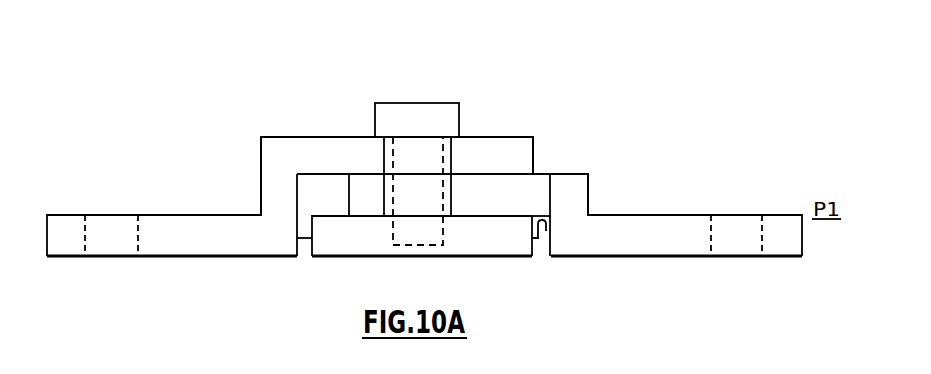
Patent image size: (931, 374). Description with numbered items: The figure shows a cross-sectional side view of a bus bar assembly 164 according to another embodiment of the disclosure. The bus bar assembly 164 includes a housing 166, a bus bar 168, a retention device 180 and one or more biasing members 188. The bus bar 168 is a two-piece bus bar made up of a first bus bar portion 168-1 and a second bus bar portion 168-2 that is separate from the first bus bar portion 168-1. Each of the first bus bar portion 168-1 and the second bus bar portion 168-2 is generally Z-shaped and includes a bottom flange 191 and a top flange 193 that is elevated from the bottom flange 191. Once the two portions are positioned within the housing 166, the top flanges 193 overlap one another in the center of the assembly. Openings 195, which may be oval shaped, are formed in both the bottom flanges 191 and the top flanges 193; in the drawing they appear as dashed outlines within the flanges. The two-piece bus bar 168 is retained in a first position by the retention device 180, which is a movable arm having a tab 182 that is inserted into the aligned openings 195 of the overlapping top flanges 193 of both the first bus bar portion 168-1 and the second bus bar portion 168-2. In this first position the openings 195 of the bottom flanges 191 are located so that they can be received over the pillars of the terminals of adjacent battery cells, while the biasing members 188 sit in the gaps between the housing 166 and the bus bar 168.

The bus bar assembly 164 is at (446, 66).
The bus bar 168 is at (534, 120).
The first bus bar portion 168-1 is at (252, 125).
The second bus bar portion 168-2 is at (616, 202).
The retention device 180 is at (398, 92).
The tab 182 is at (452, 151).
The top flange 193 is at (340, 148).
The openings 195 is at (451, 167).
The bottom flange 191 is at (172, 242).
The biasing member 188 is at (303, 229).
The housing 166 is at (476, 243).